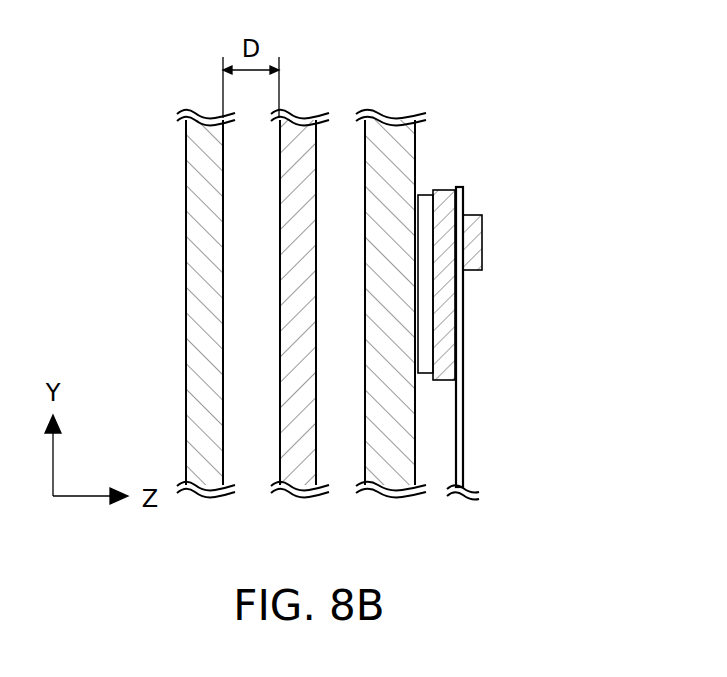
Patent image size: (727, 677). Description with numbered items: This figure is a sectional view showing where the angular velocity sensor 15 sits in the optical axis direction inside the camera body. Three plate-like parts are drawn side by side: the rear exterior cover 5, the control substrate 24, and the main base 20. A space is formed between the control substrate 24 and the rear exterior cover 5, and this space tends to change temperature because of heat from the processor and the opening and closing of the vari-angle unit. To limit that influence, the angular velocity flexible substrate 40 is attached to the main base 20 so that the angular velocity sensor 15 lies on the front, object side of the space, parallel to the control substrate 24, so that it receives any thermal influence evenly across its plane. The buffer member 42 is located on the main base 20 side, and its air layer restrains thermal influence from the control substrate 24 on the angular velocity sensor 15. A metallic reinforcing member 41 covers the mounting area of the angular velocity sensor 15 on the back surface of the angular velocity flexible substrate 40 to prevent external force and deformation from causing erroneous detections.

The rear exterior cover 5 is at (213, 495).
The control substrate 24 is at (303, 495).
The main base 20 is at (377, 495).
The buffer member 42 is at (420, 196).
The reinforcing member 41 is at (443, 192).
The angular velocity flexible substrate 40 is at (463, 410).
The angular velocity sensor 15 is at (471, 234).